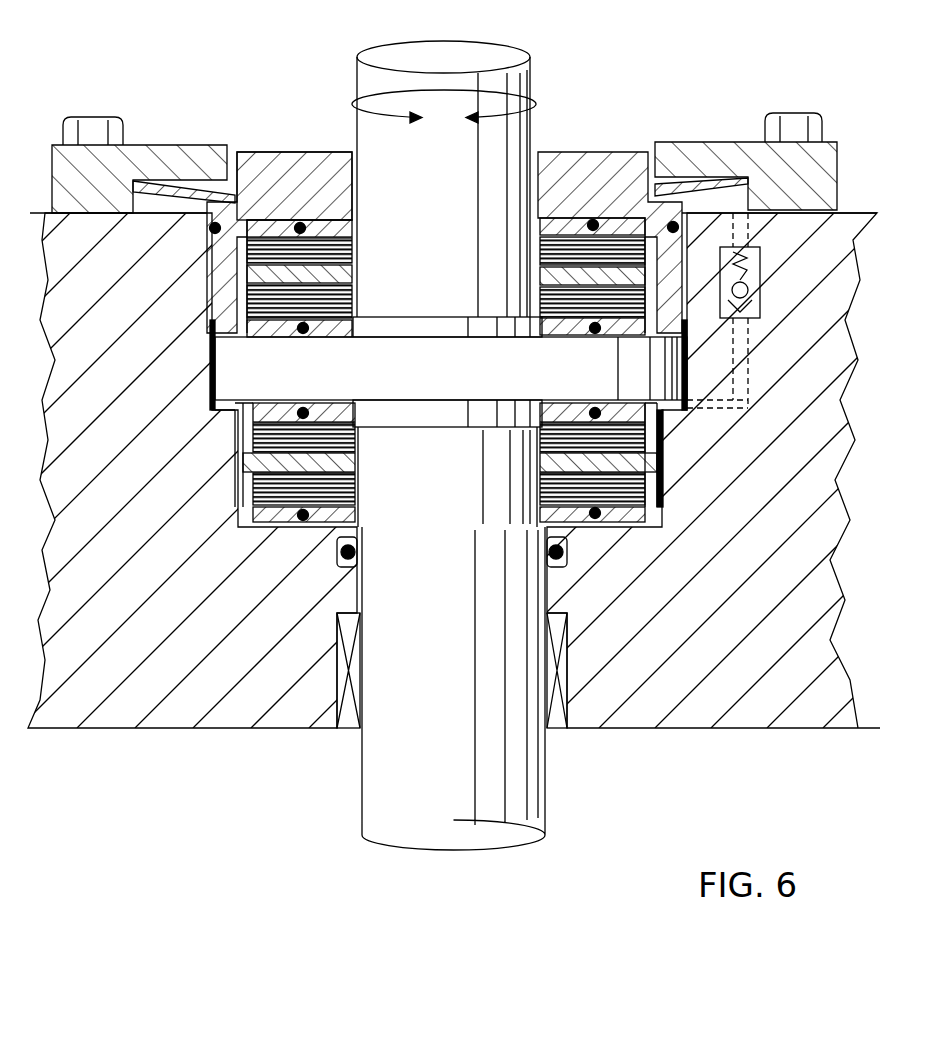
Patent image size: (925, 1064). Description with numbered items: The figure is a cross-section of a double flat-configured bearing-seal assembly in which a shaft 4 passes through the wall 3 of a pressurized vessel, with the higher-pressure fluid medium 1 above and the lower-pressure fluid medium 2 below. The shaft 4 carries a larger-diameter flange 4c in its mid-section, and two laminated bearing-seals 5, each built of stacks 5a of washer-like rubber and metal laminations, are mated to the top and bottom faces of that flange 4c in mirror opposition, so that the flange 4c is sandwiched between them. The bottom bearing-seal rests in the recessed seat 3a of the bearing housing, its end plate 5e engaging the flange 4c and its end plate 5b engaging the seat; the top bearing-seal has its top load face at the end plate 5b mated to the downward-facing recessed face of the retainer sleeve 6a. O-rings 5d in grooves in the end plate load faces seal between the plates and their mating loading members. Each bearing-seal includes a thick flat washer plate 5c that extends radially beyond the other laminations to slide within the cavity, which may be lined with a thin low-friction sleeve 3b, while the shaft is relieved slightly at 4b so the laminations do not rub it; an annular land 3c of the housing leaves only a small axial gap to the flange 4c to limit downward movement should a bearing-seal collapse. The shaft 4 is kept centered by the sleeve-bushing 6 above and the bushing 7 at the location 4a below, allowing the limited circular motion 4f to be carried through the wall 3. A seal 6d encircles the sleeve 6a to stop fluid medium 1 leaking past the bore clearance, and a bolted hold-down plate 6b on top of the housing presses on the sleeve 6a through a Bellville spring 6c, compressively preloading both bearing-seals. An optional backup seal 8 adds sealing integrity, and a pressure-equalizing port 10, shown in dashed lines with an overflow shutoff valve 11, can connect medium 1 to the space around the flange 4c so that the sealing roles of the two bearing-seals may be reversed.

The higher-pressure fluid medium 1 is at (185, 59).
The lower-pressure fluid medium 2 is at (188, 816).
The wall 3 is at (160, 661).
The recess or receptacle 3a is at (655, 517).
The low-friction sleeve 3b is at (663, 448).
The annular land or shoulder 3c is at (212, 390).
The shaft 4 is at (451, 445).
The shaft location below bearing-seal 4a is at (449, 637).
The relieved shaft section 4b is at (446, 509).
The shaft flange 4c is at (419, 388).
The rotational movement 4f is at (444, 111).
The laminated bearing-seal 5 is at (391, 334).
The stacks of laminations 5a is at (250, 300).
The end plate 5b is at (333, 218).
The flat washer plate 5c is at (356, 276).
The O-rings 5d is at (593, 220).
The end plate 5e is at (283, 358).
The sleeve-bushing 6 is at (453, 207).
The retainer sleeve 6a is at (278, 147).
The hold-down plate 6b is at (207, 143).
The Bellville spring 6c is at (682, 185).
The seal 6d is at (211, 228).
The radial bearing or bushing 7 is at (362, 683).
The backup seal 8 is at (563, 560).
The pressure-equalizing port 10 is at (752, 383).
The overflow shutoff valve 11 is at (760, 285).